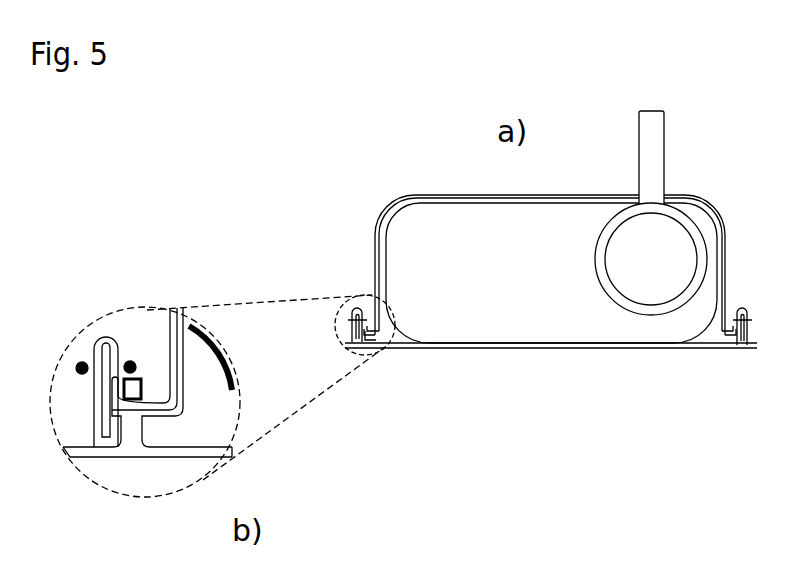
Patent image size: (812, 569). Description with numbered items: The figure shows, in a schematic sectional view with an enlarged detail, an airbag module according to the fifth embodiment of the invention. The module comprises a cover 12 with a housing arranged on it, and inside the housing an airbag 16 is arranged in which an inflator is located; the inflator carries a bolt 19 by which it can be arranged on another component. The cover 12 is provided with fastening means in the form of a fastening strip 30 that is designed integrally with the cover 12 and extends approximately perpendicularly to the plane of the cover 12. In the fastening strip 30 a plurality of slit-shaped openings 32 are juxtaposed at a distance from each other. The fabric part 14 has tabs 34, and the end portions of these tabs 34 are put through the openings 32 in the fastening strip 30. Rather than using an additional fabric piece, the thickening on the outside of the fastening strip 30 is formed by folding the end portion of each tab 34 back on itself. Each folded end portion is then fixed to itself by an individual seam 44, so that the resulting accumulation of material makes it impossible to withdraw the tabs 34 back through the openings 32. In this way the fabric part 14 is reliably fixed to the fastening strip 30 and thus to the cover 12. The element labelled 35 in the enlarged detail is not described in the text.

The cover 12 is at (626, 347).
The fabric part 14 is at (724, 296).
The airbag 16 is at (703, 330).
The bolt 19 is at (650, 132).
The fastening strip 30 is at (140, 378).
The openings 32 is at (142, 422).
The tabs 34 is at (97, 410).
The inner pin 35 is at (97, 378).
The seam 44 is at (130, 362).